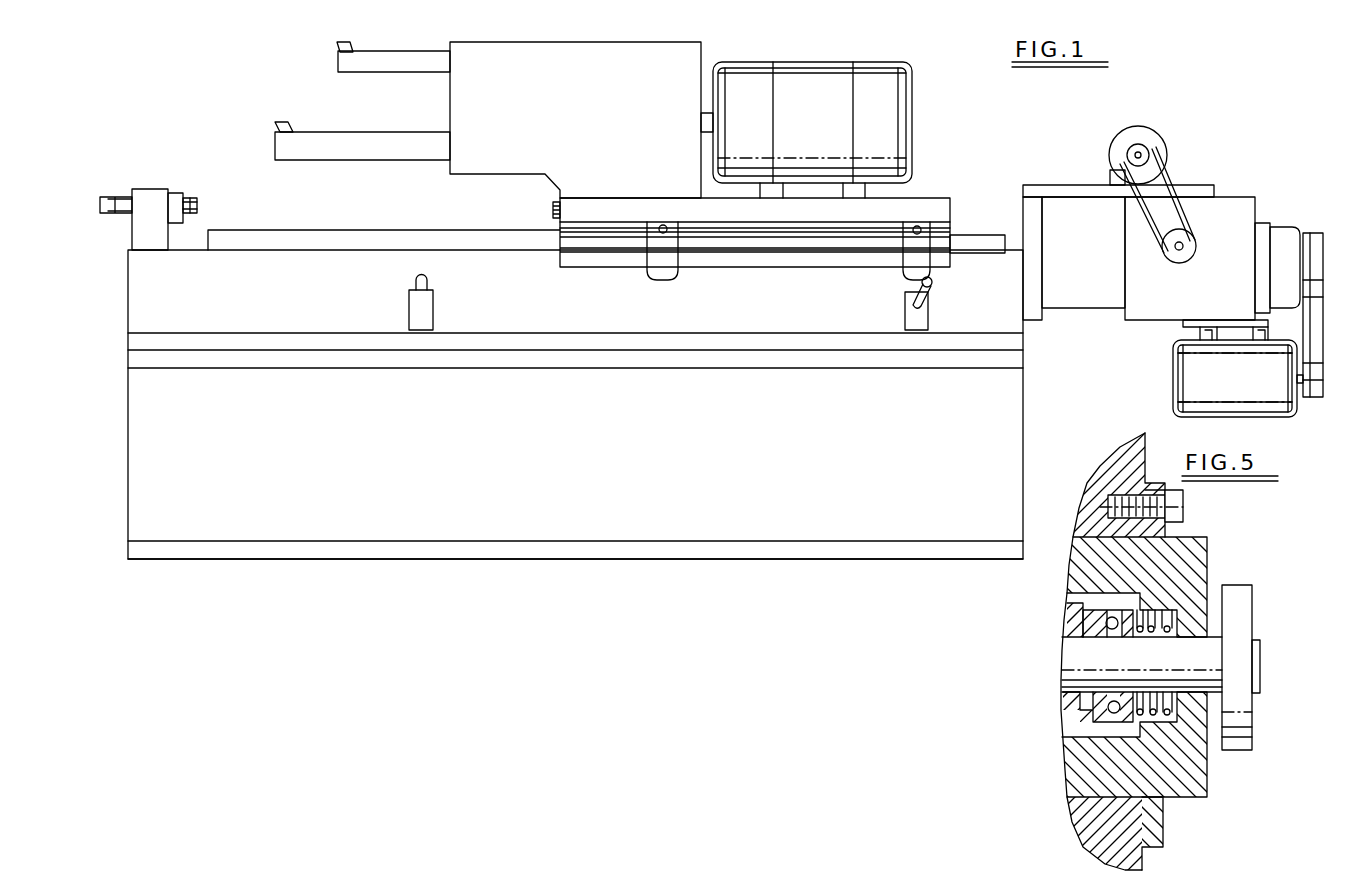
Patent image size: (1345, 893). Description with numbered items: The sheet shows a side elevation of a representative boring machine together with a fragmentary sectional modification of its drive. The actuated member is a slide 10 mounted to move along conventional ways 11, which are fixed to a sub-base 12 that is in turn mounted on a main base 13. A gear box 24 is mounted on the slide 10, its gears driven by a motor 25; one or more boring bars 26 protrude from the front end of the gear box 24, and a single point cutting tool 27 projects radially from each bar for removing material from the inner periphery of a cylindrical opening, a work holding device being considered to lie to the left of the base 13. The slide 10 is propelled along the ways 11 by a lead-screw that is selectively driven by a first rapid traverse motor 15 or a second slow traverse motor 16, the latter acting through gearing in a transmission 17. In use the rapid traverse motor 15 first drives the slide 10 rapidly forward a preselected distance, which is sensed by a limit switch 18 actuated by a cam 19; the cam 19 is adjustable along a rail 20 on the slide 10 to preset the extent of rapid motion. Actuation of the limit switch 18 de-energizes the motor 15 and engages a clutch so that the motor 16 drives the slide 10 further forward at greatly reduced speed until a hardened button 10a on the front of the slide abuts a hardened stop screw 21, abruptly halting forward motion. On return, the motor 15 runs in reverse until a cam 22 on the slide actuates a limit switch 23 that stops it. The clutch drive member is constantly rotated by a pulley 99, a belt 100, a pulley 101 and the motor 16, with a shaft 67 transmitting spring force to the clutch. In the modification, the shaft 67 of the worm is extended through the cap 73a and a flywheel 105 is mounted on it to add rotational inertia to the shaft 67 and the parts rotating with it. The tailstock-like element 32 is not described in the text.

In FIG. 1, the slide 10 is at (912, 197).
In FIG. 1, the hardened button 10a is at (553, 210).
In FIG. 1, the ways 11 is at (972, 237).
In FIG. 1, the sub-base 12 is at (363, 311).
In FIG. 1, the main base 13 is at (805, 525).
In FIG. 1, the rapid traverse motor 15 is at (1178, 384).
In FIG. 1, the slow traverse motor 16 is at (1110, 149).
In FIG. 1, the transmission 17 is at (1245, 218).
In FIG. 1, the limit switch 18 is at (428, 308).
In FIG. 1, the cam 19 is at (660, 268).
In FIG. 1, the rail 20 is at (578, 227).
In FIG. 1, the hardened stop screw 21 is at (198, 207).
In FIG. 1, the cam 22 is at (910, 258).
In FIG. 1, the limit switch 23 is at (925, 318).
In FIG. 1, the gear box 24 is at (683, 47).
In FIG. 1, the motor 25 is at (845, 67).
In FIG. 1, the boring bar 26 is at (420, 62).
In FIG. 1, the single point cutting tool 27 is at (337, 48).
In FIG. 1, the tailstock 32 is at (148, 195).
In FIG. 5, the shaft 67 is at (1075, 654).
In FIG. 5, the cap 73a is at (1200, 556).
In FIG. 1, the pulley 99 is at (1182, 255).
In FIG. 1, the belt 100 is at (1170, 185).
In FIG. 1, the pulley 101 is at (1150, 153).
In FIG. 5, the flywheel 105 is at (1240, 629).